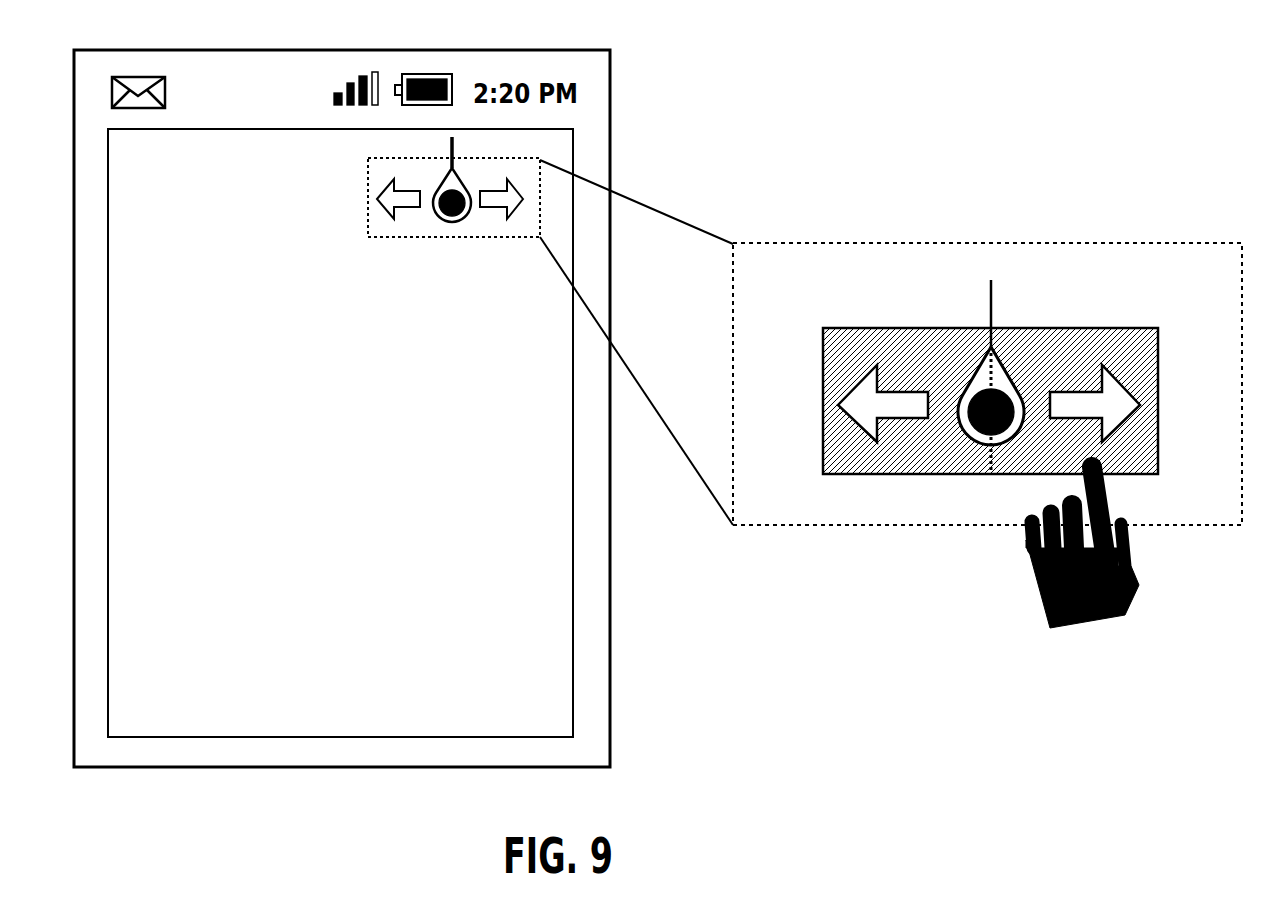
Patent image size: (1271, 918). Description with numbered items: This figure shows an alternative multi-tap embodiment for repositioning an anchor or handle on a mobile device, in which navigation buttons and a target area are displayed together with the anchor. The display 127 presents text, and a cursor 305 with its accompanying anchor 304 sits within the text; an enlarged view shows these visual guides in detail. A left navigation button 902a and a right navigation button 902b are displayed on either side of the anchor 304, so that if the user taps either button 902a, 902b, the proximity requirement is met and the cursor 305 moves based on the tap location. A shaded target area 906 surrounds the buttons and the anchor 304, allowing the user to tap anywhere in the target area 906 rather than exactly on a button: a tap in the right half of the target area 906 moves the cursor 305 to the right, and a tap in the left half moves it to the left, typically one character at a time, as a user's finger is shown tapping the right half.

The display 127 is at (340, 433).
The cursor 305 is at (1011, 364).
The anchor 304 is at (949, 452).
The left navigation button 902a is at (846, 419).
The right navigation button 902b is at (1130, 420).
The target area 906 is at (1028, 401).